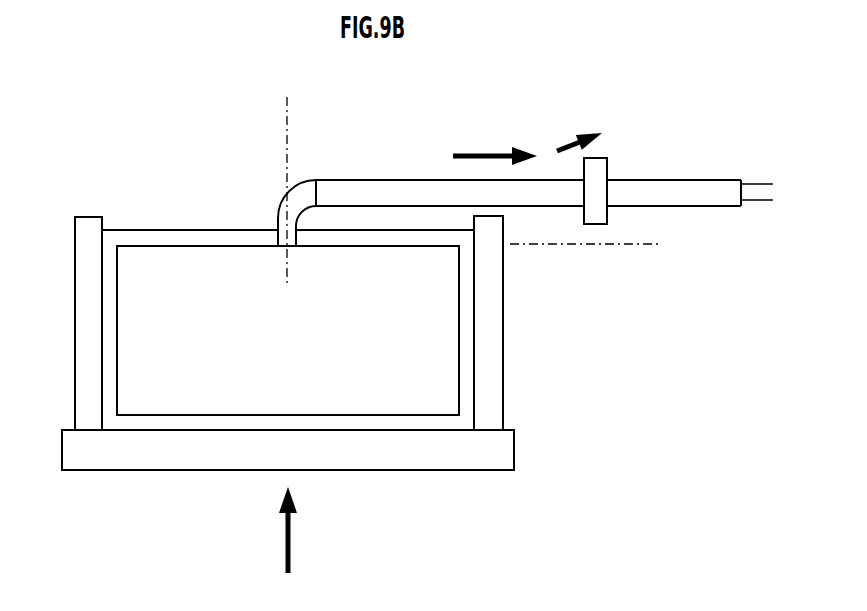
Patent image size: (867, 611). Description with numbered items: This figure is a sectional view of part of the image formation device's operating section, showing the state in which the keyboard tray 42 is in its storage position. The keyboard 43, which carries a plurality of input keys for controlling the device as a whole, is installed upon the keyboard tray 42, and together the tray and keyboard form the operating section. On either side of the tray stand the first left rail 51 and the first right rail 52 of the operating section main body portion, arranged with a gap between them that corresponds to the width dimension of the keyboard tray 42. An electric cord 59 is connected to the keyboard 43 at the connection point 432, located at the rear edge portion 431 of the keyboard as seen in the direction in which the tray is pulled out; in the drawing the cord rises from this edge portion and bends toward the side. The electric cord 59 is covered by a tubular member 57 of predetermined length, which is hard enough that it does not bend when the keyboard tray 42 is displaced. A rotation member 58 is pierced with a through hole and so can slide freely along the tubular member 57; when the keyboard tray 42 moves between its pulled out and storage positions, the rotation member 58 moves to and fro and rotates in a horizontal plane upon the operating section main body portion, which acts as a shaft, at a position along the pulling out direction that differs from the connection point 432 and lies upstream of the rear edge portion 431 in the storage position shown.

The keyboard tray 42 is at (143, 449).
The keyboard 43 is at (230, 383).
The rear edge portion 431 is at (170, 245).
The connection point 432 is at (285, 242).
The first left rail 51 is at (85, 325).
The first right rail 52 is at (493, 337).
The tubular member 57 is at (394, 192).
The rotation member 58 is at (597, 168).
The electric cord 59 is at (302, 195).